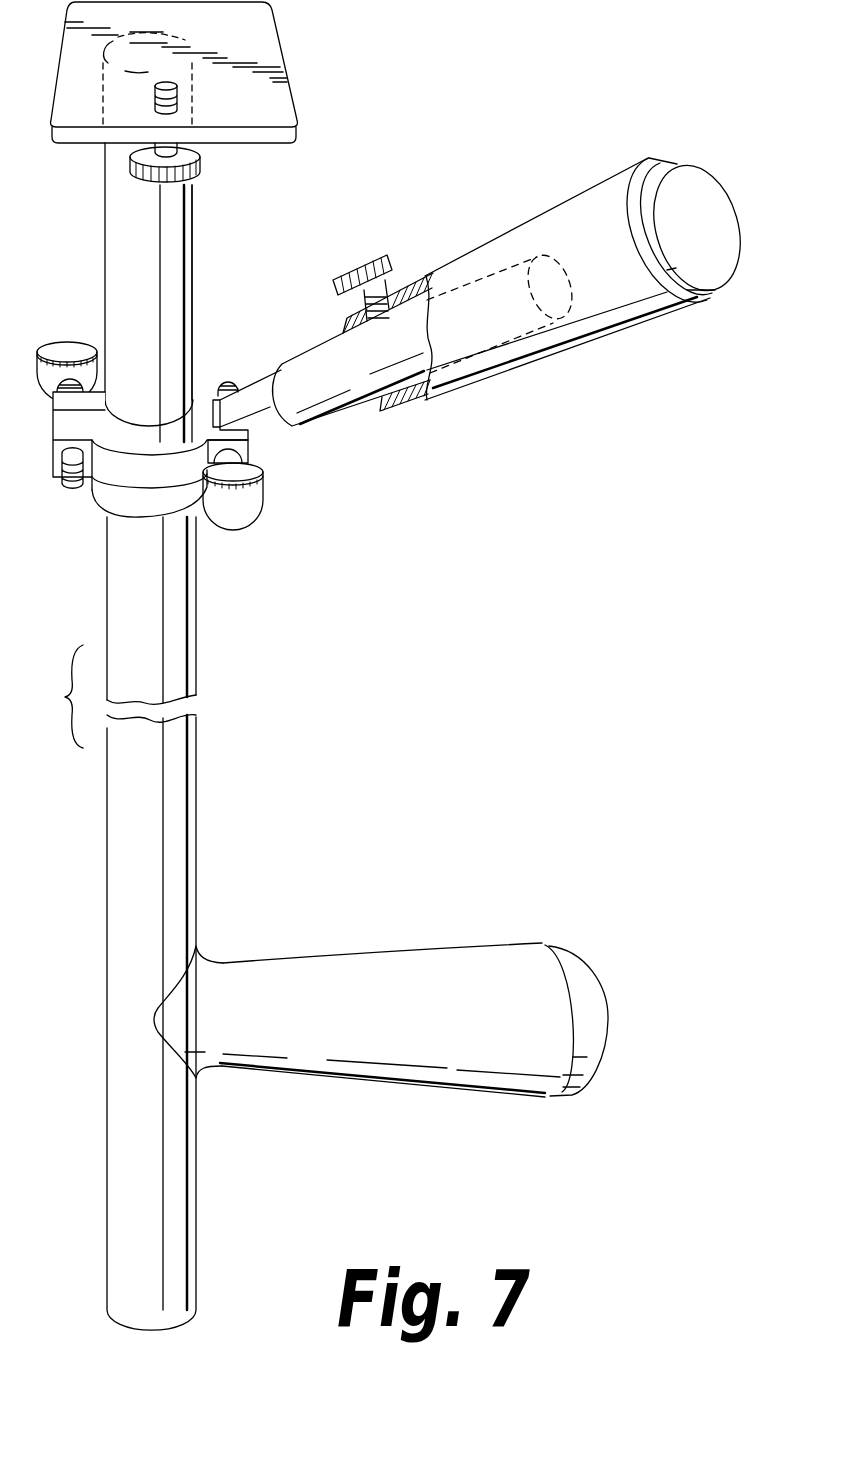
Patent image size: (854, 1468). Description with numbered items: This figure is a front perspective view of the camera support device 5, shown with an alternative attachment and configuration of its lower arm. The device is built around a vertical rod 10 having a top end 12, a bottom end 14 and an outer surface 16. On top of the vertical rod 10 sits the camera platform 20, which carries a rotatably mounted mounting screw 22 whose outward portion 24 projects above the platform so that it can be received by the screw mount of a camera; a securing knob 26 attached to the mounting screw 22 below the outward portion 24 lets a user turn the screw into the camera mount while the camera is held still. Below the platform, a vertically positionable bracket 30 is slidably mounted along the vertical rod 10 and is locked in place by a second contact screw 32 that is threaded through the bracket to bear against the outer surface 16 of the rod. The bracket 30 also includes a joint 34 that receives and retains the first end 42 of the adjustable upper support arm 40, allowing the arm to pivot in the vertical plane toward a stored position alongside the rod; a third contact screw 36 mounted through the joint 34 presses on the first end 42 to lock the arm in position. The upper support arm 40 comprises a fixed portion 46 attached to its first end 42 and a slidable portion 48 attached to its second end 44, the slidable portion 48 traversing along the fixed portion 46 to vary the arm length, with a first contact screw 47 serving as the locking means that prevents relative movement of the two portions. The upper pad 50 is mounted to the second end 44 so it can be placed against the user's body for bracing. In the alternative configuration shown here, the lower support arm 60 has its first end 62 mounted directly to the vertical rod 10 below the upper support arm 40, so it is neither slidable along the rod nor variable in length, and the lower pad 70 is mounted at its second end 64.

The device 5 is at (302, 757).
The vertical rod 10 is at (104, 237).
The top end 12 is at (103, 185).
The bottom end 14 is at (108, 1229).
The outer surface 16 is at (177, 257).
The camera platform 20 is at (267, 70).
The mounting screw 22 is at (191, 39).
The outward portion 24 is at (178, 103).
The securing knob 26 is at (200, 163).
The vertically positionable bracket 30 is at (99, 504).
The second contact screw 32 is at (65, 343).
The joint 34 is at (252, 452).
The third contact screw 36 is at (240, 512).
The upper support arm 40 is at (540, 363).
The first end 42 is at (392, 410).
The second end 44 is at (652, 328).
The fixed portion 46 is at (296, 366).
The first contact screw 47 is at (366, 272).
The slidable portion 48 is at (423, 290).
The upper pad 50 is at (706, 215).
The lower support arm 60 is at (279, 957).
The first end 62 is at (222, 1068).
The second end 64 is at (516, 945).
The lower pad 70 is at (597, 975).